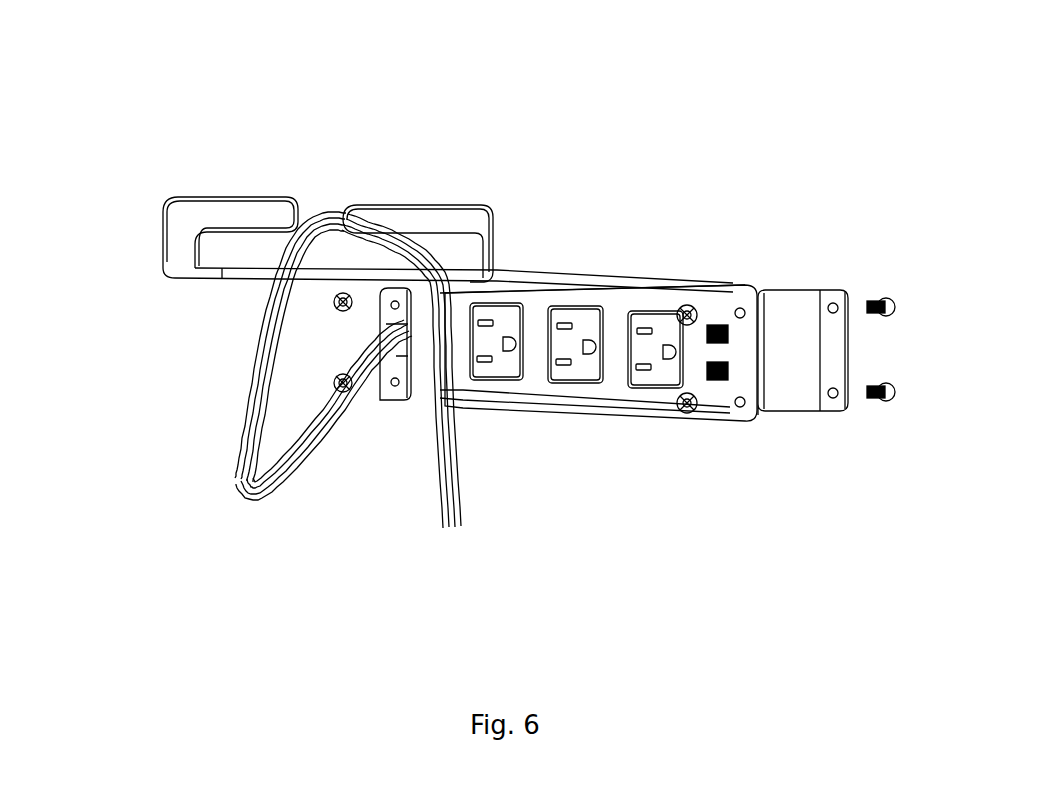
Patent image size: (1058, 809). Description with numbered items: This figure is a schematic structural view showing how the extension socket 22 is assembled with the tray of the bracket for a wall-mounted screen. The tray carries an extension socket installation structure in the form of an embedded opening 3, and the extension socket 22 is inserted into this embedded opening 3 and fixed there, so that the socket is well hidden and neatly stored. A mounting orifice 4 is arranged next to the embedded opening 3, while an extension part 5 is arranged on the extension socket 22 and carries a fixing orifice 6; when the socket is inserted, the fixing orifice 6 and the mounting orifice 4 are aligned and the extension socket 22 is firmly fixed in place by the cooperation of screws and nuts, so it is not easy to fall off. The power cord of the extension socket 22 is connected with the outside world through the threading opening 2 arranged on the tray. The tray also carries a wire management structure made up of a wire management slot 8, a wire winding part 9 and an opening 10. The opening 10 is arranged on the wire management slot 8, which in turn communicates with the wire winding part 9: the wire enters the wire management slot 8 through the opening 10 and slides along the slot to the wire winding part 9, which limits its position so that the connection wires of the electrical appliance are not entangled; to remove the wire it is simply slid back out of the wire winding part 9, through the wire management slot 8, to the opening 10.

The threading opening 2 is at (392, 335).
The embedded opening 3 is at (420, 383).
The mounting orifice 4 is at (740, 407).
The extension part 5 is at (832, 360).
The fixing orifice 6 is at (838, 402).
The wire management slot 8 is at (225, 240).
The wire winding part 9 is at (265, 357).
The opening 10 is at (308, 213).
The extension socket 22 is at (780, 323).